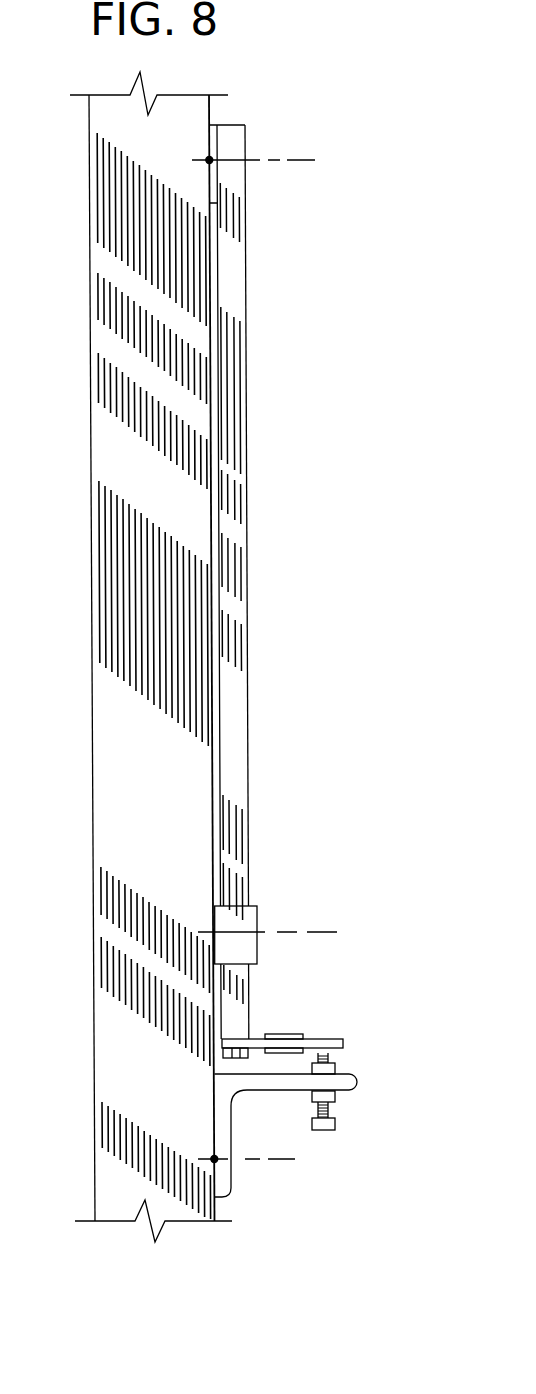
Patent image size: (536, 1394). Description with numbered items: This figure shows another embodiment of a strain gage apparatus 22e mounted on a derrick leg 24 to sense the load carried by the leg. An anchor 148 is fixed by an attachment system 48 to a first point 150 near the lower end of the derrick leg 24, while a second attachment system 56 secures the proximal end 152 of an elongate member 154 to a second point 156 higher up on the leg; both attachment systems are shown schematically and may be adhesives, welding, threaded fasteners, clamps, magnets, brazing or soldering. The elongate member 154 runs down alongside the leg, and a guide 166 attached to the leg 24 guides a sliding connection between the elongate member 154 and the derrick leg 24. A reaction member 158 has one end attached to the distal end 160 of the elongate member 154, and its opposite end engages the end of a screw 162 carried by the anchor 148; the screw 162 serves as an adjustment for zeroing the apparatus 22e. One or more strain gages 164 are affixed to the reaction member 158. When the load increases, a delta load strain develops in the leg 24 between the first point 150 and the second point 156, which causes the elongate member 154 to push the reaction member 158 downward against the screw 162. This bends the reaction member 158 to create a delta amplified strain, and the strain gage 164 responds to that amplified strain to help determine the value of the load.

The strain gage apparatus 22e is at (309, 584).
The derrick leg 24 is at (213, 698).
The attachment system 48 is at (268, 1162).
The attachment system 56 is at (255, 166).
The anchor 148 is at (233, 1178).
The first point 150 is at (213, 1157).
The proximal end 152 is at (235, 124).
The elongate member 154 is at (248, 607).
The second point 156 is at (151, 657).
The reaction member 158 is at (333, 1038).
The distal end 160 is at (250, 1012).
The screw 162 is at (334, 1057).
The strain gage 164 is at (288, 1034).
The guide 166 is at (257, 918).